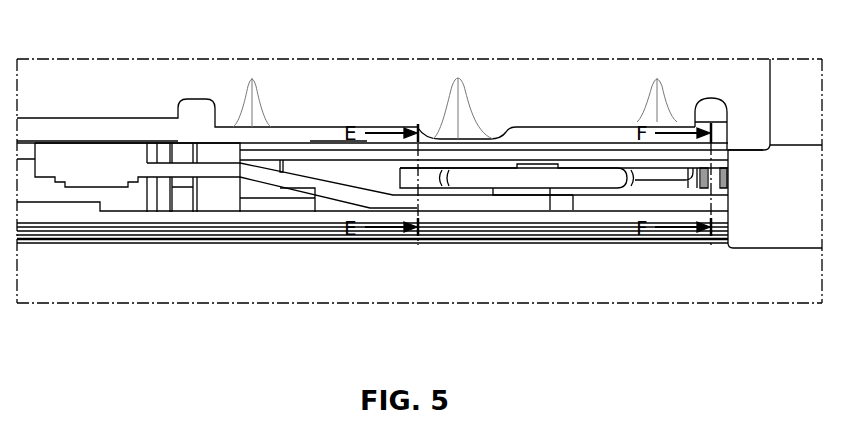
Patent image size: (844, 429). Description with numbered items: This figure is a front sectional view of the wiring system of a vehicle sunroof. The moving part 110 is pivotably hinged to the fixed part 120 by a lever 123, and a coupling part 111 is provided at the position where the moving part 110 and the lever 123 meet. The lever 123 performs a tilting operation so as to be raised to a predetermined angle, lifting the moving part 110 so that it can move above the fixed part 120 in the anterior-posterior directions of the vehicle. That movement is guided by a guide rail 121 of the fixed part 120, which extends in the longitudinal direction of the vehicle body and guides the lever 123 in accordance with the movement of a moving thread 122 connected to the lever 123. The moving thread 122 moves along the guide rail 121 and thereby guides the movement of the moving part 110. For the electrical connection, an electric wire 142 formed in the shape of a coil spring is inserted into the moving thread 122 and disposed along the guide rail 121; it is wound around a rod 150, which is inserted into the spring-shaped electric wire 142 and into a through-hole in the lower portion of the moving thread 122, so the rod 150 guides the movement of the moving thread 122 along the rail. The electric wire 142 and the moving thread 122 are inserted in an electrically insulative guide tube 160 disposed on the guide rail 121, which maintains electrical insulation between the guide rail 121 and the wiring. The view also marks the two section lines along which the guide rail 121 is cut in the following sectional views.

The coupling part 111 is at (127, 128).
The moving part 110 is at (260, 103).
The rod 150 is at (367, 178).
The electrically insulative guide tube 160 is at (592, 163).
The lever 123 is at (98, 160).
The guide rail 121 is at (308, 217).
The fixed part 120 is at (430, 270).
The moving thread 122 is at (587, 180).
The electric wire 142 is at (723, 193).